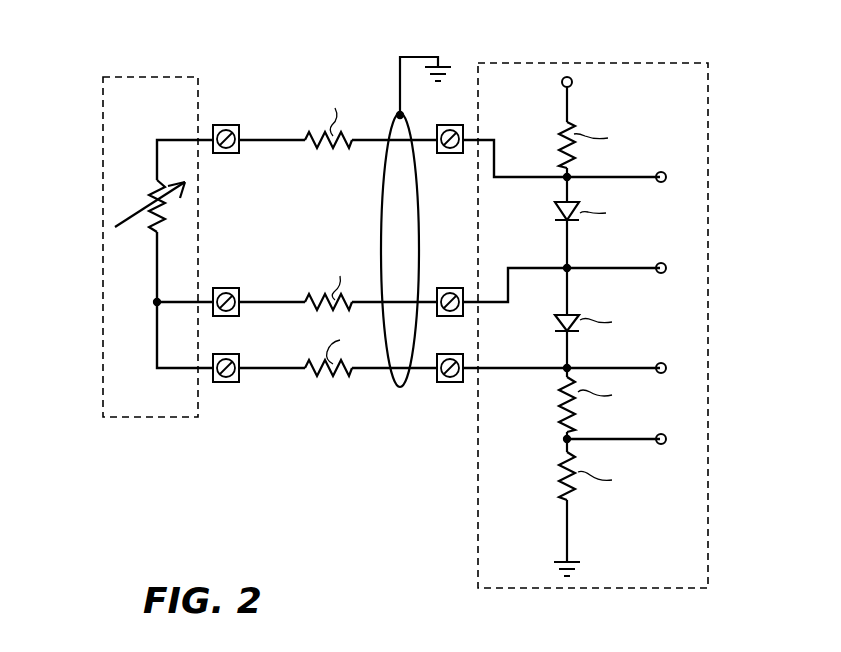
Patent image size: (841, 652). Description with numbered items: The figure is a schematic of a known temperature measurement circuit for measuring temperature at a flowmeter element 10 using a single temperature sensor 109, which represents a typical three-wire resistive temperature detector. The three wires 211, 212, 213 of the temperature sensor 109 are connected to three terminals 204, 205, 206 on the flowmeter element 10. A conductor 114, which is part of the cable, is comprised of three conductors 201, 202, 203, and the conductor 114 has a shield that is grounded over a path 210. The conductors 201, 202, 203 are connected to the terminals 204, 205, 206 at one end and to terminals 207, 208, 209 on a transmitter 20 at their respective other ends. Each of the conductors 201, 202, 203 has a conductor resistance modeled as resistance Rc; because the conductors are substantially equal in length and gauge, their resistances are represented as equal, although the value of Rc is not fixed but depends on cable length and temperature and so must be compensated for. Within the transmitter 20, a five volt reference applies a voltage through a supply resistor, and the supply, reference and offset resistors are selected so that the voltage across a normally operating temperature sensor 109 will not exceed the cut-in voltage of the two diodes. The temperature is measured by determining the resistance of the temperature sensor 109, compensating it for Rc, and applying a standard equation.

The flowmeter element 10 is at (125, 417).
The transmitter 20 is at (478, 531).
The temperature sensor 109 is at (157, 188).
The conductor 114 is at (383, 178).
The conductor 201 is at (268, 140).
The conductor 202 is at (276, 302).
The conductor 203 is at (275, 368).
The terminal 204 is at (238, 153).
The terminal 205 is at (224, 288).
The terminal 206 is at (228, 382).
The terminal 207 is at (455, 153).
The terminal 208 is at (449, 288).
The terminal 209 is at (445, 382).
The path 210 is at (408, 57).
The wire 211 is at (178, 140).
The wire 212 is at (157, 258).
The wire 213 is at (157, 342).